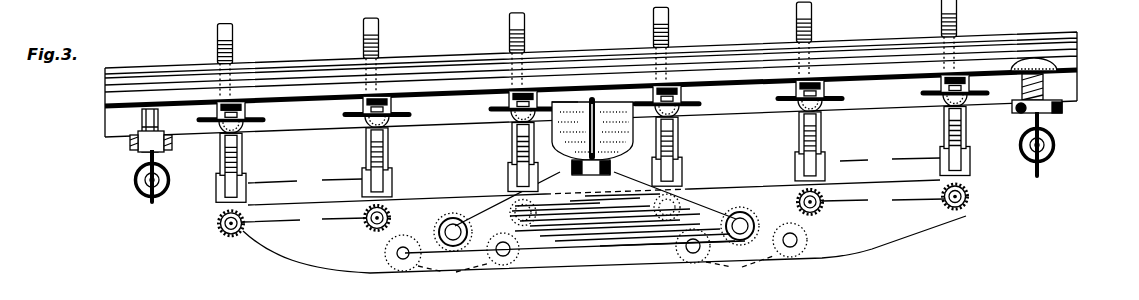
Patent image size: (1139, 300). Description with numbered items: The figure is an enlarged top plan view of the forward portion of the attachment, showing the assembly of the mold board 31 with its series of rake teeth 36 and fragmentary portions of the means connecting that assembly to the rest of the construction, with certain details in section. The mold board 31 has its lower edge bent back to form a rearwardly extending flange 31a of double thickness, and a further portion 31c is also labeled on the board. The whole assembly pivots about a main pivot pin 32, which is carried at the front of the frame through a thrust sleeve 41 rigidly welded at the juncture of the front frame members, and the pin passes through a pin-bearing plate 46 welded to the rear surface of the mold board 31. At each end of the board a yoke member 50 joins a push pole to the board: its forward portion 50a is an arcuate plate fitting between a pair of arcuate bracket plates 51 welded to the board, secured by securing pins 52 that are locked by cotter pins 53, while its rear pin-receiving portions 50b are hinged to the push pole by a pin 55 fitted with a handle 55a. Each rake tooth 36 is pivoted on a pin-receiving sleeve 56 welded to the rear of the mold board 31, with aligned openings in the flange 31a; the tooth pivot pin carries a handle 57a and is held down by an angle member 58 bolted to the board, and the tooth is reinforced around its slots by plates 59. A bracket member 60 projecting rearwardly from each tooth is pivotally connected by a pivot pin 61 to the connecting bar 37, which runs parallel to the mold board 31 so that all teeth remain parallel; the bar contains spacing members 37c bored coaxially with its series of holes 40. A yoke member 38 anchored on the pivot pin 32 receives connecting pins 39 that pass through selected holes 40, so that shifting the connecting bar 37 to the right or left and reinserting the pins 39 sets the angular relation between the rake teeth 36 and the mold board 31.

The mold board 31 is at (105, 88).
The rearwardly extending flange 31a is at (105, 118).
The beam attachment portion 31c is at (567, 102).
The main pivot pin 32 is at (597, 112).
The rake teeth 36 is at (511, 22).
The connecting bar 37 is at (326, 272).
The spacing members 37c is at (462, 272).
The yoke member 38 is at (565, 240).
The connecting pins 39 is at (453, 231).
The holes 40 is at (403, 259).
The thrust sleeve 41 is at (612, 167).
The pin-bearing plate 46 is at (634, 123).
The yoke member 50 is at (138, 157).
The forward portion of yoke member 50a is at (208, 85).
The pin-receiving portions 50b is at (142, 190).
The bracket plates 51 is at (160, 122).
The securing pins 52 is at (168, 143).
The cotter pins 53 is at (134, 155).
The pin 55 is at (135, 180).
The handle 55a is at (152, 201).
The pin-receiving sleeve 56 is at (778, 97).
The handle 57a is at (344, 115).
The angle member 58 is at (248, 130).
The reinforcing plates 59 is at (364, 156).
The bracket member 60 is at (362, 181).
The pivot pins 61 is at (366, 218).